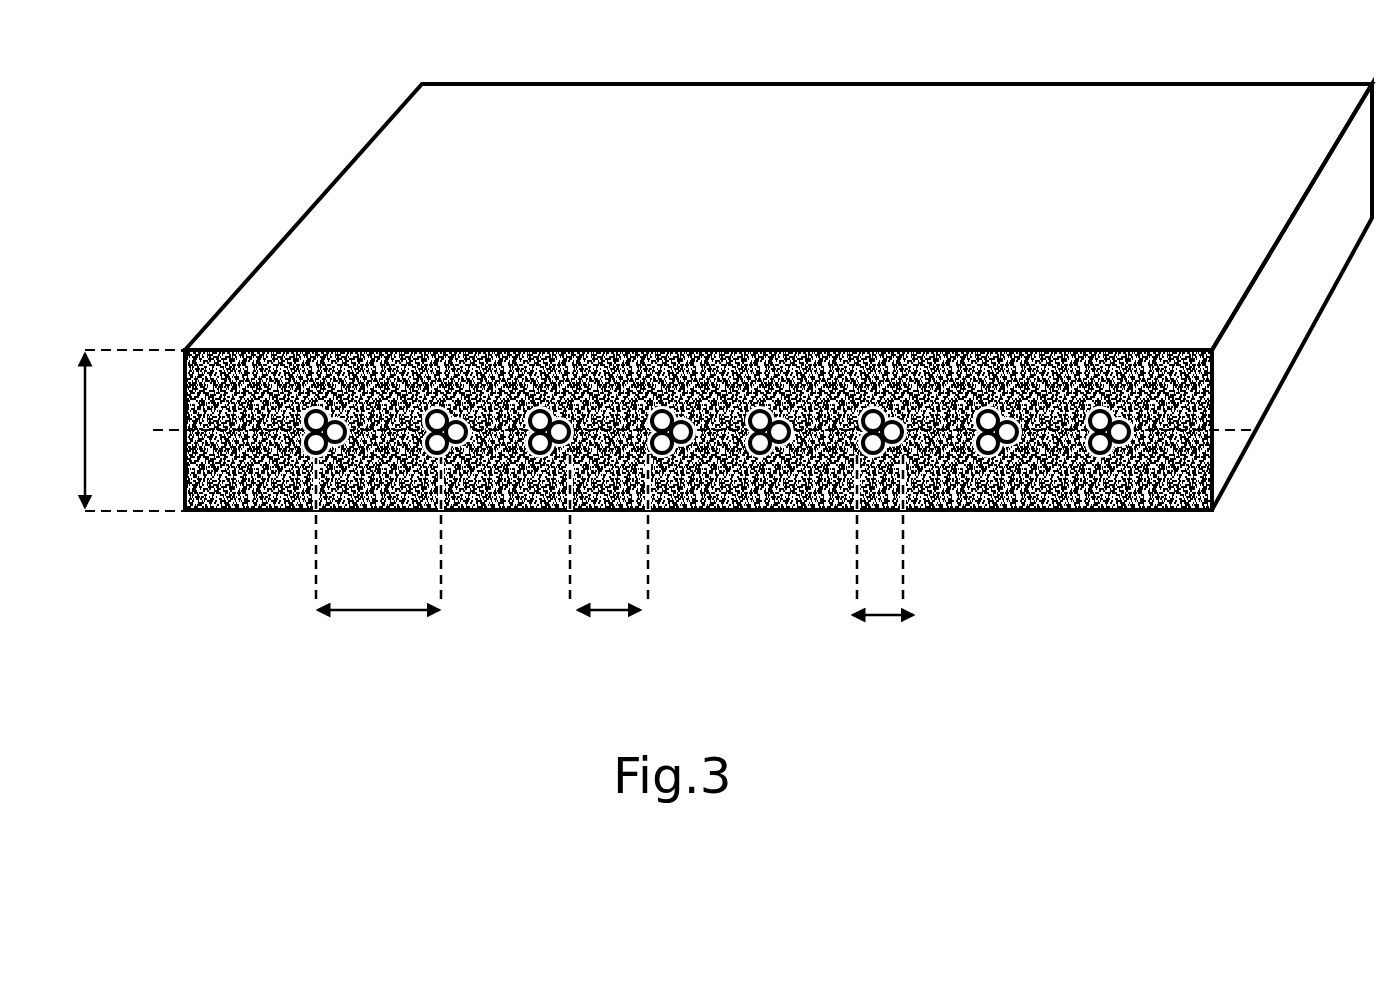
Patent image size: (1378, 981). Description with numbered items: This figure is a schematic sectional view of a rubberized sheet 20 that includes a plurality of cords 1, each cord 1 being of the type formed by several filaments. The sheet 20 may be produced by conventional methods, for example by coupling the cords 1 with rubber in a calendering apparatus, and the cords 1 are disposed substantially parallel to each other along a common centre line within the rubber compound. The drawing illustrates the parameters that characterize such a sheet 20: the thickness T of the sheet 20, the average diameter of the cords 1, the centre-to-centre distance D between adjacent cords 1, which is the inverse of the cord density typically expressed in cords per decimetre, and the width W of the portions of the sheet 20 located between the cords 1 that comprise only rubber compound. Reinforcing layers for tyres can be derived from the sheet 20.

The rubberized sheet 20 is at (298, 162).
The cord 1 is at (1102, 445).
The thickness of the sheet T is at (110, 430).
The centre-to-centre distance between the cords D is at (378, 532).
The width of the rubber-only portions W is at (609, 532).